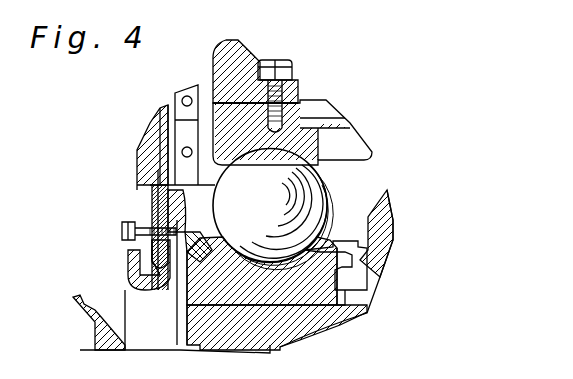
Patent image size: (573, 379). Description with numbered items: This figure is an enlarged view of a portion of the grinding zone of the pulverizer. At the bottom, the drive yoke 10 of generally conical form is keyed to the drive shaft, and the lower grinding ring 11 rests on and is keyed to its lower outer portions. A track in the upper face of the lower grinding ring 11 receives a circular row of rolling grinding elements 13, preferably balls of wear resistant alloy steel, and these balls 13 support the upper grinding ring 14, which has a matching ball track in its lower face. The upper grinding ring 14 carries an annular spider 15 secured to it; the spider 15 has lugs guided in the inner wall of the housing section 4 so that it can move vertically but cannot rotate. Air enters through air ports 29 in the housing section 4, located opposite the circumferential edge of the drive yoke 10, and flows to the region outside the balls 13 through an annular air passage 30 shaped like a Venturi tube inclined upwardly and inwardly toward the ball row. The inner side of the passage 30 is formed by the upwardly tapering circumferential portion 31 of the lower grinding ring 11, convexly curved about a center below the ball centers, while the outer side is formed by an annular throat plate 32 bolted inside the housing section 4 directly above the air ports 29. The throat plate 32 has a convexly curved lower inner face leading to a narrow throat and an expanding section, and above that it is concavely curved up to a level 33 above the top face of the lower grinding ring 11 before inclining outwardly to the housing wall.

The housing section 4 is at (138, 168).
The drive yoke 10 is at (388, 239).
The lower grinding ring 11 is at (315, 262).
The rolling grinding elements 13 is at (328, 188).
The upper grinding ring 14 is at (308, 128).
The annular spider 15 is at (236, 50).
The air ports 29 is at (145, 315).
The annular air passage 30 is at (195, 268).
The upwardly tapering circumferential portion 31 is at (190, 226).
The annular throat plate 32 is at (140, 262).
The level 33 is at (172, 244).